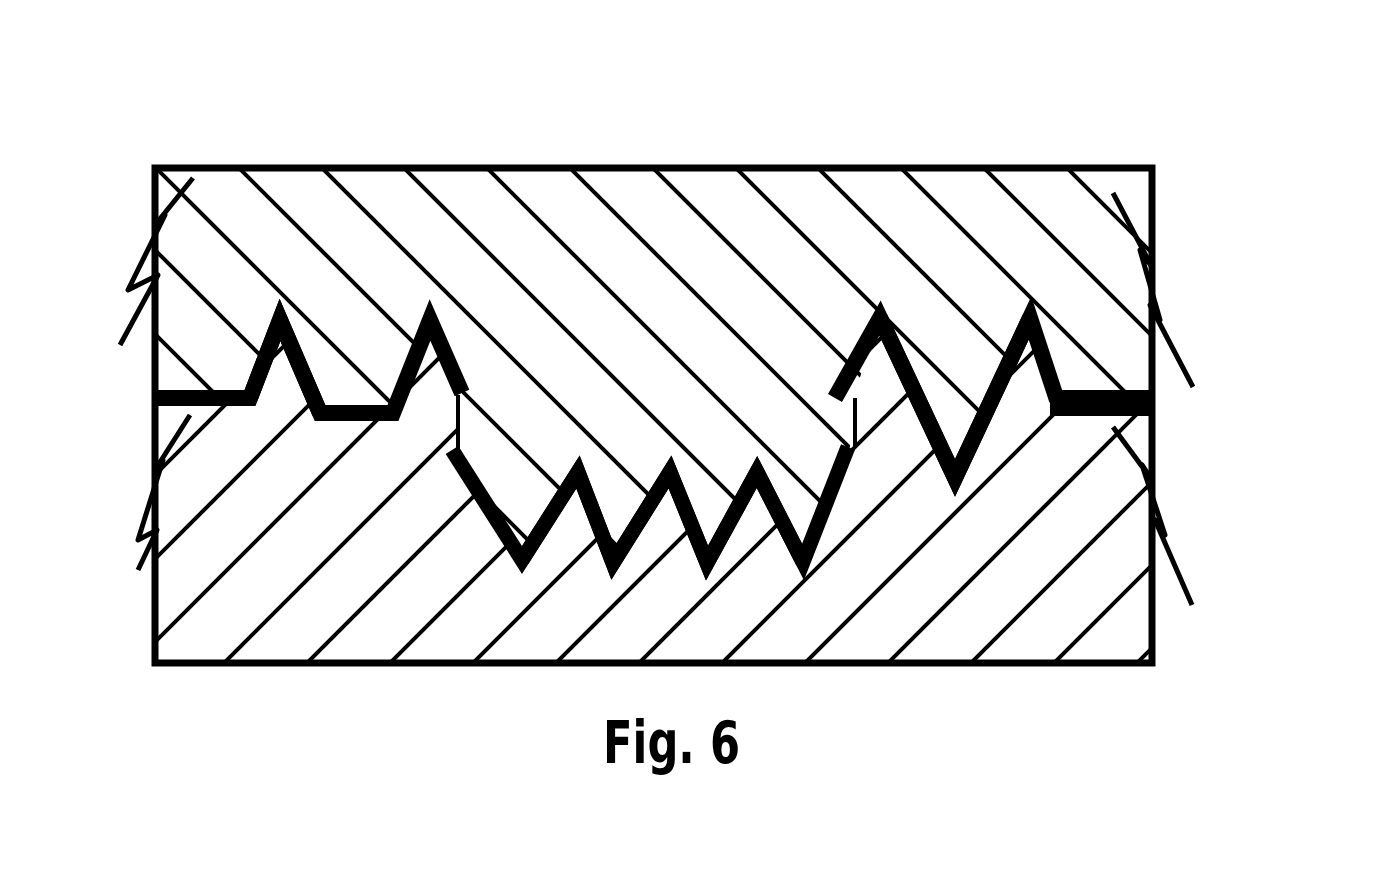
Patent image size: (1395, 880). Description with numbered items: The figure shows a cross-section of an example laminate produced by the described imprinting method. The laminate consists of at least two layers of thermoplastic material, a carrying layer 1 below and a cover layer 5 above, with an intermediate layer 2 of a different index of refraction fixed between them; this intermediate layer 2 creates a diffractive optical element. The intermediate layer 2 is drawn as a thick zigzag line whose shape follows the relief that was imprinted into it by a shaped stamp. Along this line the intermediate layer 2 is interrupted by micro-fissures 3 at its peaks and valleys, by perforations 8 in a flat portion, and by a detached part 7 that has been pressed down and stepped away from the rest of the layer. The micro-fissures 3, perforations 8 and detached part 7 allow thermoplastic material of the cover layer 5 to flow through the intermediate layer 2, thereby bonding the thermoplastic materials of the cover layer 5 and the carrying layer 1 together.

The carrying layer 1 is at (697, 485).
The intermediate layer 2 is at (767, 440).
The micro-fissures 3 is at (661, 257).
The cover layer 5 is at (697, 380).
The detached part 7 is at (662, 300).
The perforations 8 is at (387, 225).